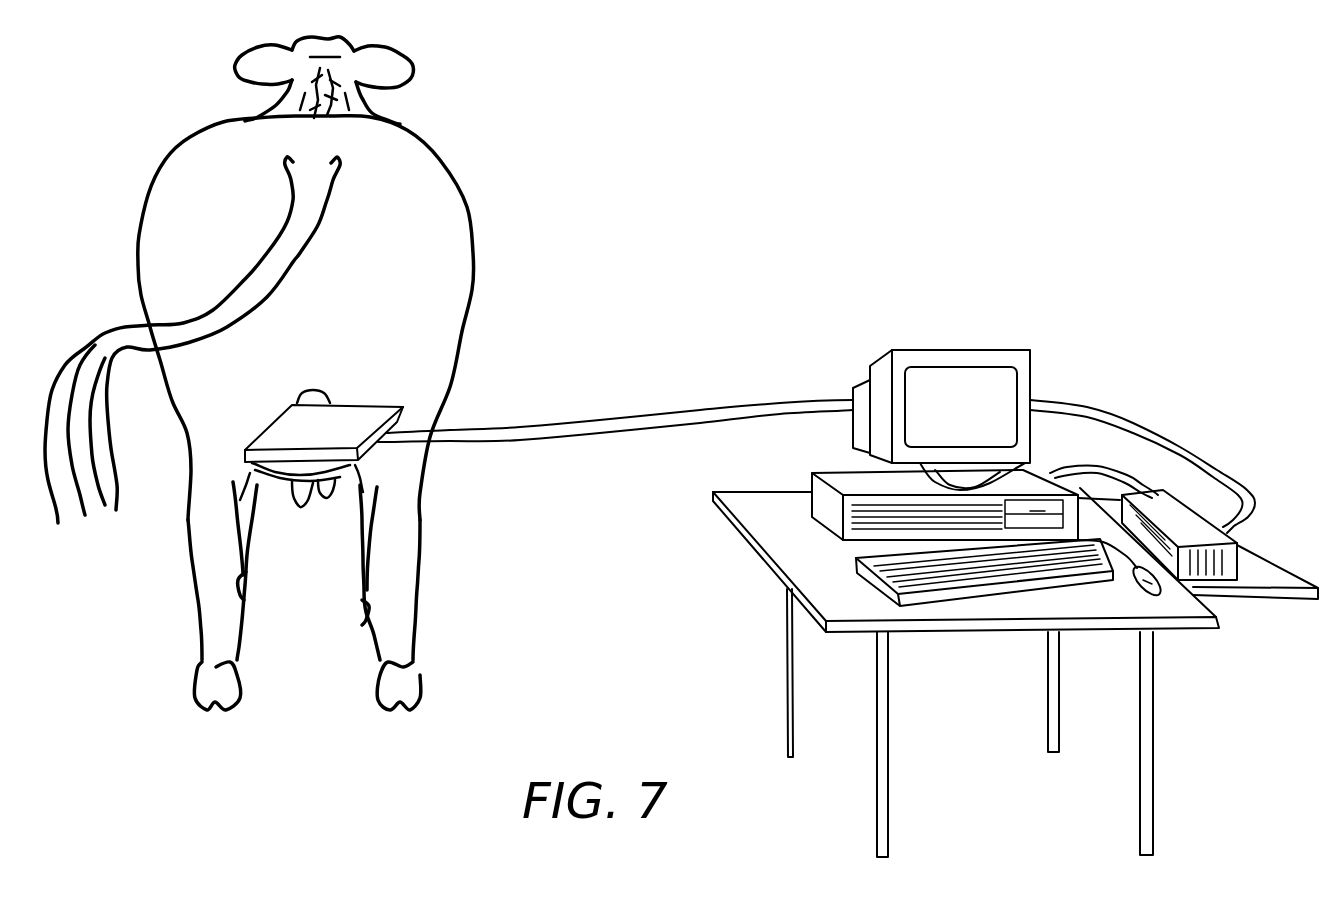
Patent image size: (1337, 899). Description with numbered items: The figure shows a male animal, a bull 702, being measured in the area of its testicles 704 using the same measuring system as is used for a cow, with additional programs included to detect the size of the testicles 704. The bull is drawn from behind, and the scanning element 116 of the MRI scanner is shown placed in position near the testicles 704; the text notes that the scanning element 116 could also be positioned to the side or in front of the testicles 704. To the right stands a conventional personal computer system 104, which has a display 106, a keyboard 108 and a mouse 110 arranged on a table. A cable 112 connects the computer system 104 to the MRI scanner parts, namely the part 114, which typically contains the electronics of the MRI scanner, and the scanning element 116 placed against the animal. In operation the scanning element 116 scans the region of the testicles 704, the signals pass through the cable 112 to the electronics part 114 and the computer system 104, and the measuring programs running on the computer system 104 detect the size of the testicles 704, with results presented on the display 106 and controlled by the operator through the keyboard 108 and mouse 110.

The male animal (bull) 702 is at (386, 310).
The testicles 704 is at (303, 490).
The scanning element 116 is at (357, 418).
The cable 112 is at (622, 411).
The computer system 104 is at (850, 482).
The display 106 is at (997, 390).
The keyboard 108 is at (944, 587).
The mouse 110 is at (1150, 591).
The MRI scanner part (electronics) 114 is at (1153, 502).